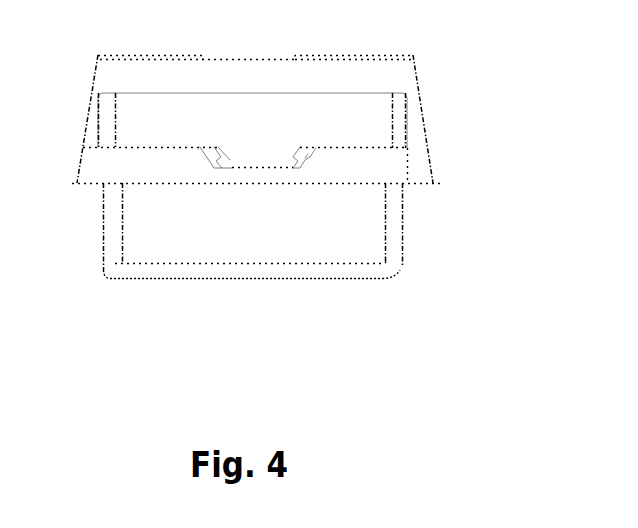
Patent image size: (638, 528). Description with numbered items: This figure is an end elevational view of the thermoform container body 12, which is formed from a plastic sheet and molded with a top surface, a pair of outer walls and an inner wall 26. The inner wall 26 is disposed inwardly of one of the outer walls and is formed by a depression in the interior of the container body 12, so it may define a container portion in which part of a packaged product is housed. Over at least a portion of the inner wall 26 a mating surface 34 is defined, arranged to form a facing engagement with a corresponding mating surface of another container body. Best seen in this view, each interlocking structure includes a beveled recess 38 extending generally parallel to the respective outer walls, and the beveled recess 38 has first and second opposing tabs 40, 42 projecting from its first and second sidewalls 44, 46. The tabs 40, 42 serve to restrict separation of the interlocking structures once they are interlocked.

The container body 12 is at (422, 117).
The inner wall 26 is at (146, 231).
The mating surface 34 is at (246, 238).
The beveled recess 38 is at (258, 110).
The first tab 40 is at (217, 147).
The second tab 42 is at (303, 156).
The first sidewall 44 is at (228, 160).
The second sidewall 46 is at (302, 159).